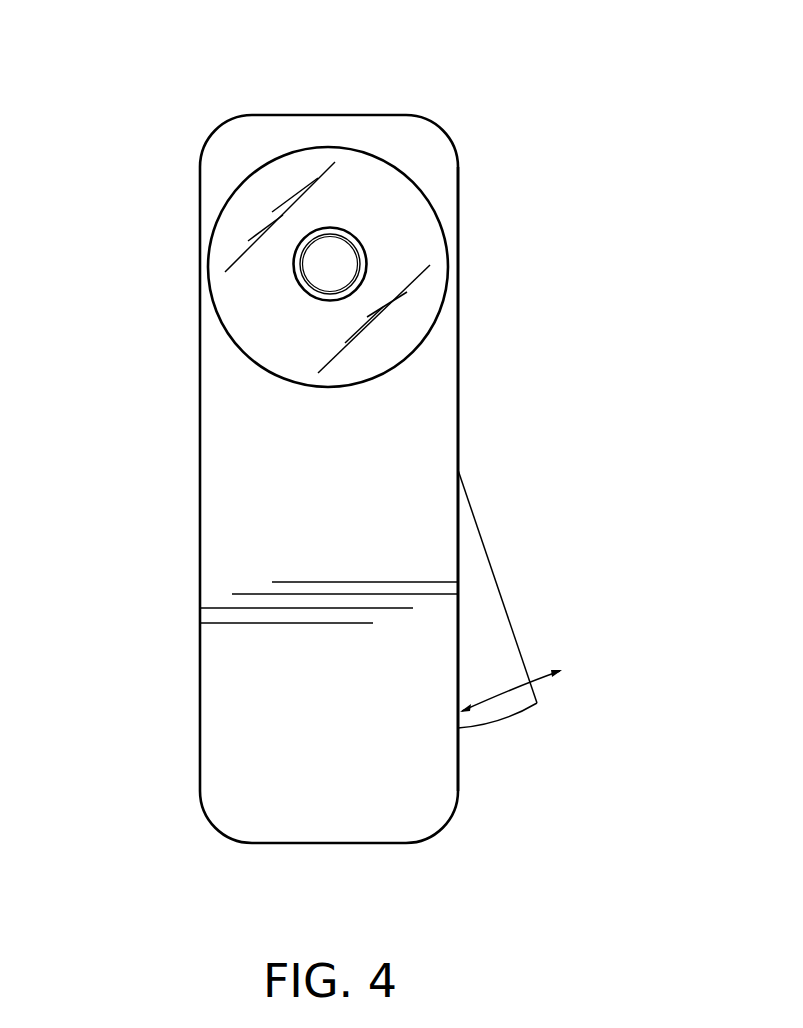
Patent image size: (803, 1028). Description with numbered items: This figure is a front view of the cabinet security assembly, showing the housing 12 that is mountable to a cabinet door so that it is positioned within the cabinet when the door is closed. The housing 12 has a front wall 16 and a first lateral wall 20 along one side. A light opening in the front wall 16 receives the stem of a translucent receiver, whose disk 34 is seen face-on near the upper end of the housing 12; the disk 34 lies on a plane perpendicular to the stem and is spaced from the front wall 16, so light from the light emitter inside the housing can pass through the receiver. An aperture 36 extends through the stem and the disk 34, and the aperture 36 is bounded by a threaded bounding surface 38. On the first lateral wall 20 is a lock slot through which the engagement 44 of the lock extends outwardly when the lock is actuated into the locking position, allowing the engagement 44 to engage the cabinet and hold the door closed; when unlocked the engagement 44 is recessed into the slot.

The housing 12 is at (200, 231).
The front wall 16 is at (227, 502).
The first lateral wall 20 is at (458, 372).
The disk 34 is at (380, 152).
The aperture 36 is at (307, 274).
The bounding surface 38 is at (305, 247).
The engagement 44 is at (515, 632).